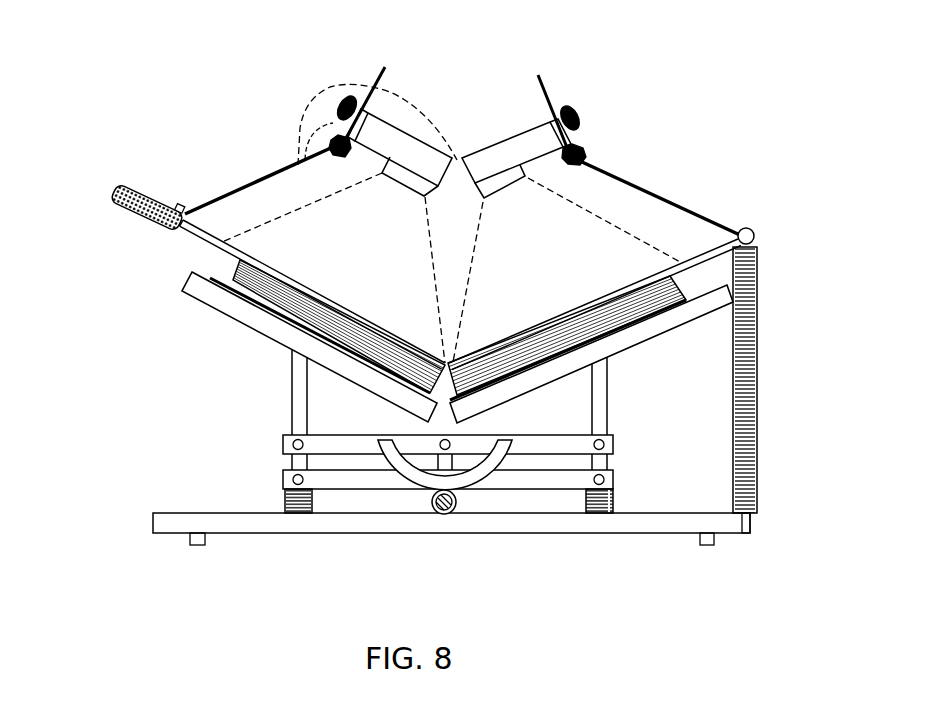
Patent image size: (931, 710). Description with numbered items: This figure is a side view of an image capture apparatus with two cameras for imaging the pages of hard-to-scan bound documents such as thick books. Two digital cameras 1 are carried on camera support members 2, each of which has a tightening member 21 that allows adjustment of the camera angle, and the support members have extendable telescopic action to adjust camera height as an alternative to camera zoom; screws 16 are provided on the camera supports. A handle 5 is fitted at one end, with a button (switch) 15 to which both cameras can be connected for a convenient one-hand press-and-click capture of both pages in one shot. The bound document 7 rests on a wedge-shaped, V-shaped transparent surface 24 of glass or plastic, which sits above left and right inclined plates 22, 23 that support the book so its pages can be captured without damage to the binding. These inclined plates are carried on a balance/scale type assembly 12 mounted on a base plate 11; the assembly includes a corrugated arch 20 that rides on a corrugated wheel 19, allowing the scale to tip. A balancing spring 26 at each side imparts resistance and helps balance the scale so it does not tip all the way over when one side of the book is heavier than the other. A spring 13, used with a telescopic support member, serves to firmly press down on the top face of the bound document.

The digital camera 1 is at (414, 124).
The camera support member 2 is at (248, 177).
The handle 5 is at (112, 182).
The bound document 7 is at (681, 285).
The base plate 11 is at (569, 542).
The balance/scale type assembly 12 is at (622, 442).
The spring 13 is at (767, 352).
The button (switch) 15 is at (168, 192).
The screw 16 is at (347, 92).
The tightening member 21 is at (325, 131).
The corrugated wheel 19 is at (431, 508).
The corrugated arch 20 is at (493, 486).
The left inclined plate 22 is at (230, 323).
The right inclined plate 23 is at (657, 350).
The wedge shaped transparent surface 24 is at (189, 247).
The balancing spring 26 is at (276, 497).